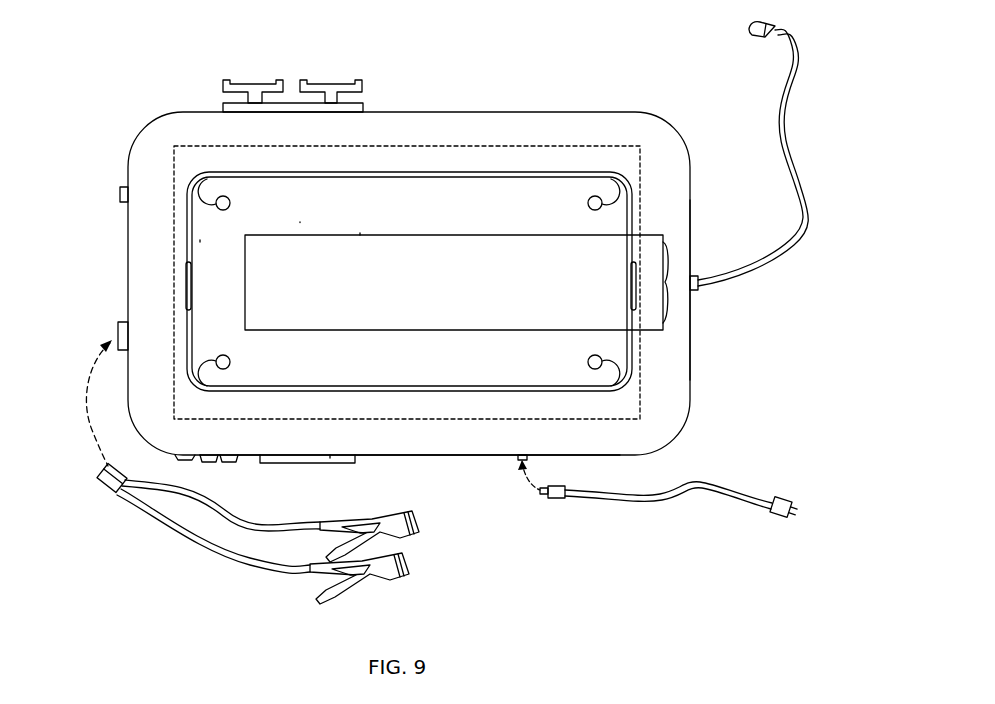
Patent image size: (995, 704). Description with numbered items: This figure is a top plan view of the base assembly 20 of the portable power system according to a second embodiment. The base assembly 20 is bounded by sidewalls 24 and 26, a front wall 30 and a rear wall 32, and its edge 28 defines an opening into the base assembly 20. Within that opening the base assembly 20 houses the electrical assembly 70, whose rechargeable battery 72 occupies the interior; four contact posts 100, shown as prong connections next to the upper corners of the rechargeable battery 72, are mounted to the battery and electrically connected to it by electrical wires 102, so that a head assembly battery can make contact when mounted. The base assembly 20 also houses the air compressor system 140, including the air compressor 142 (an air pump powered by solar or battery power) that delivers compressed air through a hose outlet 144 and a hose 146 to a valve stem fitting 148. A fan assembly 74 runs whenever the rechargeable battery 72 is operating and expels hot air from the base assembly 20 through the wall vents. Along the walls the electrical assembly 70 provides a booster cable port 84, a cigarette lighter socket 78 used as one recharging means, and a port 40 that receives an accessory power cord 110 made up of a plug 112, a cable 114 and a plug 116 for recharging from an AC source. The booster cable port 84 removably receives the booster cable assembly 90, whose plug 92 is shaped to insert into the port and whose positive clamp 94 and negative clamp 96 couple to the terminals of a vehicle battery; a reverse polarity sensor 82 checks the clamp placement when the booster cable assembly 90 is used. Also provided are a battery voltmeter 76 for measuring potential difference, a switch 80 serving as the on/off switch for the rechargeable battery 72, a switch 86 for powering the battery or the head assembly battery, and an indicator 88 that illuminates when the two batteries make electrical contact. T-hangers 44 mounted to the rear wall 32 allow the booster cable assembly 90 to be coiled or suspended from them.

The base assembly 20 is at (670, 116).
The sidewall 24 is at (127, 268).
The sidewall 26 is at (692, 230).
The edge 28 is at (534, 171).
The front wall 30 is at (436, 456).
The rear wall 32 is at (480, 112).
The port 40 is at (528, 459).
The T-hangers 44 is at (325, 82).
The electrical assembly 70 is at (203, 247).
The rechargeable battery 72 is at (318, 219).
The fan assembly 74 is at (670, 308).
The battery voltmeter 76 is at (333, 462).
The cigarette lighter socket 78 is at (272, 462).
The switch 80 is at (208, 462).
The reverse polarity sensor 82 is at (187, 459).
The booster cable port 84 is at (118, 327).
The switch 86 is at (120, 194).
The indicator 88 is at (247, 462).
The booster cable assembly 90 is at (150, 523).
The plug 92 is at (104, 474).
The positive clamp 94 is at (412, 531).
The negative clamp 96 is at (402, 573).
The contact posts 100 is at (223, 195).
The electrical wires 102 is at (212, 182).
The accessory power cord 110 is at (695, 497).
The plug 112 is at (554, 500).
The cable 114 is at (656, 493).
The plug 116 is at (787, 495).
The air compressor system 140 is at (359, 235).
The air compressor 142 is at (330, 296).
The hose outlet 144 is at (698, 280).
The hose 146 is at (792, 147).
The valve stem fitting 148 is at (778, 27).